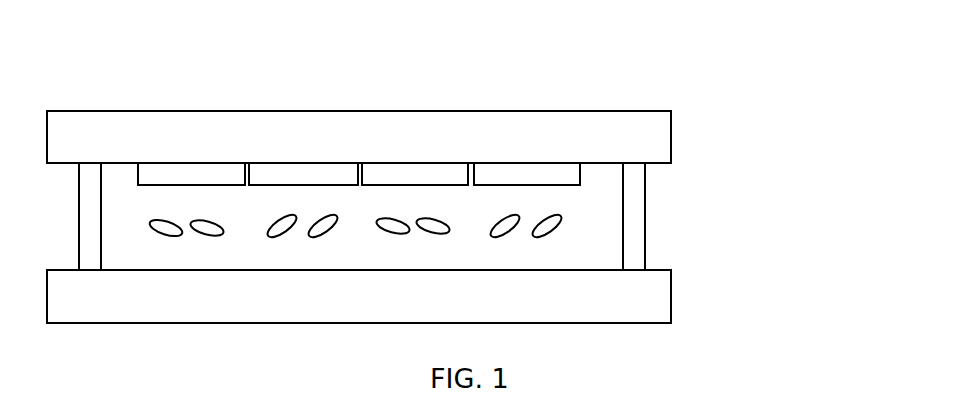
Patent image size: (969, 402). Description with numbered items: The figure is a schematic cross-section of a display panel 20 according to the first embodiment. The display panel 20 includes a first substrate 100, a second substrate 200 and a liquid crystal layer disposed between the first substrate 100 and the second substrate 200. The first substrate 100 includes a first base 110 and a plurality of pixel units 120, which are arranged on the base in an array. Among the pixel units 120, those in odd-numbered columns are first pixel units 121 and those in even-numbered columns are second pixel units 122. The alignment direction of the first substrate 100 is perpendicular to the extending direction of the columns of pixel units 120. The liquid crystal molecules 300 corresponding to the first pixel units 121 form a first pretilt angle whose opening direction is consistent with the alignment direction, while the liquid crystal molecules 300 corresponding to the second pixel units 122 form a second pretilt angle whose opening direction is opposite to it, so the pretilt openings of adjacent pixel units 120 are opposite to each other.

The display panel 20 is at (395, 48).
The first substrate 100 is at (773, 115).
The first base 110 is at (655, 130).
The pixel units 120 is at (580, 185).
The first pixel units 121 is at (415, 178).
The second pixel units 122 is at (517, 178).
The second substrate 200 is at (643, 297).
The liquid crystal molecules 300 is at (555, 222).